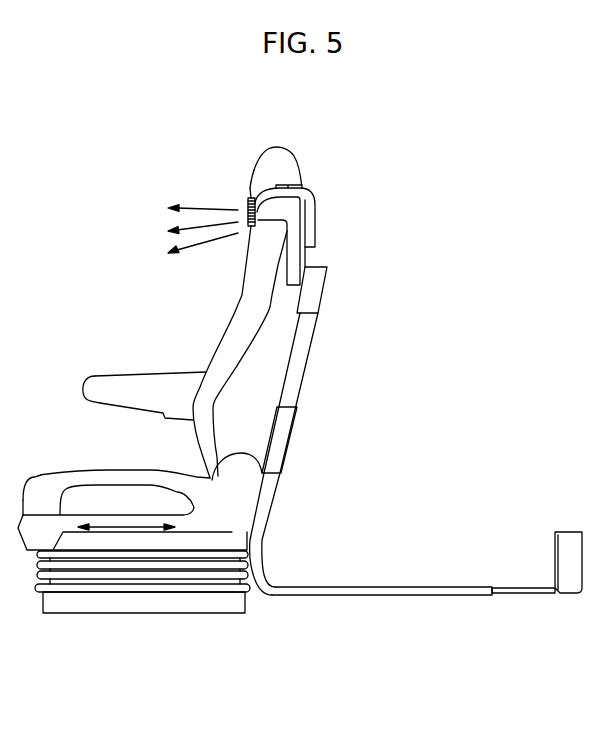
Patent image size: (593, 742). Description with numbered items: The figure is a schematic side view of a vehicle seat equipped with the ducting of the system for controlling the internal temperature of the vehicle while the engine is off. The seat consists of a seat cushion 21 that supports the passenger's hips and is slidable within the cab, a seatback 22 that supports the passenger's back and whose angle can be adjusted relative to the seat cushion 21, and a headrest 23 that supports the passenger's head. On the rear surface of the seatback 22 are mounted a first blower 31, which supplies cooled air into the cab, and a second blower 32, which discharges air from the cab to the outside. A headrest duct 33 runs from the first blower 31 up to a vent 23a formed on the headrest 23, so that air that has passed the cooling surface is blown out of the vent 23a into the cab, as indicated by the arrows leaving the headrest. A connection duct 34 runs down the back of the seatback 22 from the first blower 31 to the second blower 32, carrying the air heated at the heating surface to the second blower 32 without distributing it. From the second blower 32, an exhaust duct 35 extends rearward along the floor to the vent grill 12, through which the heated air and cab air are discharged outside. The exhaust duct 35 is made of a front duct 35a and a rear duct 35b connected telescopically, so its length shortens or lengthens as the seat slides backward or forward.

The vent grill 12 is at (572, 538).
The seat cushion 21 is at (82, 478).
The seatback 22 is at (232, 347).
The headrest 23 is at (276, 160).
The vent 23a is at (248, 204).
The first blower 31 is at (308, 293).
The second blower 32 is at (283, 430).
The headrest duct 33 is at (295, 212).
The connection duct 34 is at (297, 352).
The exhaust duct 35 is at (421, 651).
The front duct 35a is at (447, 590).
The rear duct 35b is at (531, 632).